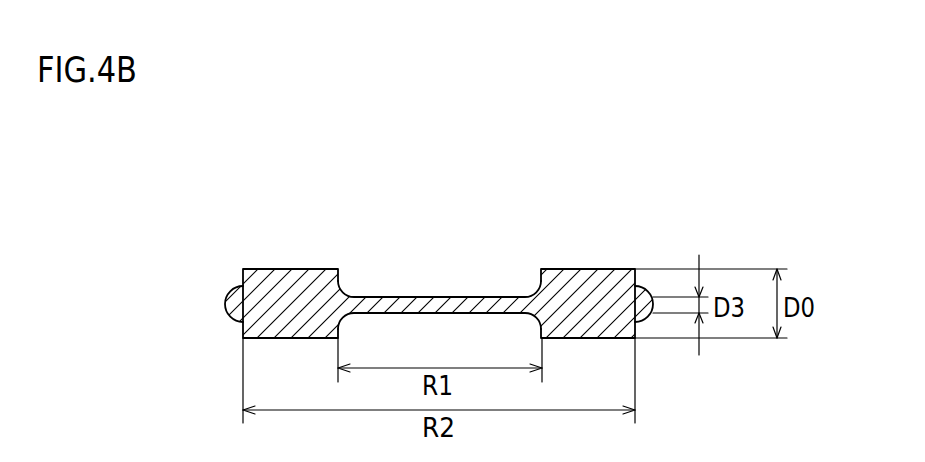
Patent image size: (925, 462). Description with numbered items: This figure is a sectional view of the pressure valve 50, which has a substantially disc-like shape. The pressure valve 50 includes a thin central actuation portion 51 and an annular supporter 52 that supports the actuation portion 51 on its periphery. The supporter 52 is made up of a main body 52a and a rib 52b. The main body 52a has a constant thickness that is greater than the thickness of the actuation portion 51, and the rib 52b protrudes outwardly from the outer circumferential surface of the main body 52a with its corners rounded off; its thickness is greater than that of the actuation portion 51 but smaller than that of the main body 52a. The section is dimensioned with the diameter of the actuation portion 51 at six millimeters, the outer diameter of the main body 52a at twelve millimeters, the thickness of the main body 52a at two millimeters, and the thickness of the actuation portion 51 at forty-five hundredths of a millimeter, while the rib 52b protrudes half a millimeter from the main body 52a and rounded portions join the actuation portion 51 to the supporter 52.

The pressure valve 50 is at (421, 265).
The actuation portion 51 is at (437, 305).
The annular supporter 52 is at (219, 302).
The main body 52a is at (243, 275).
The rib 52b is at (235, 305).